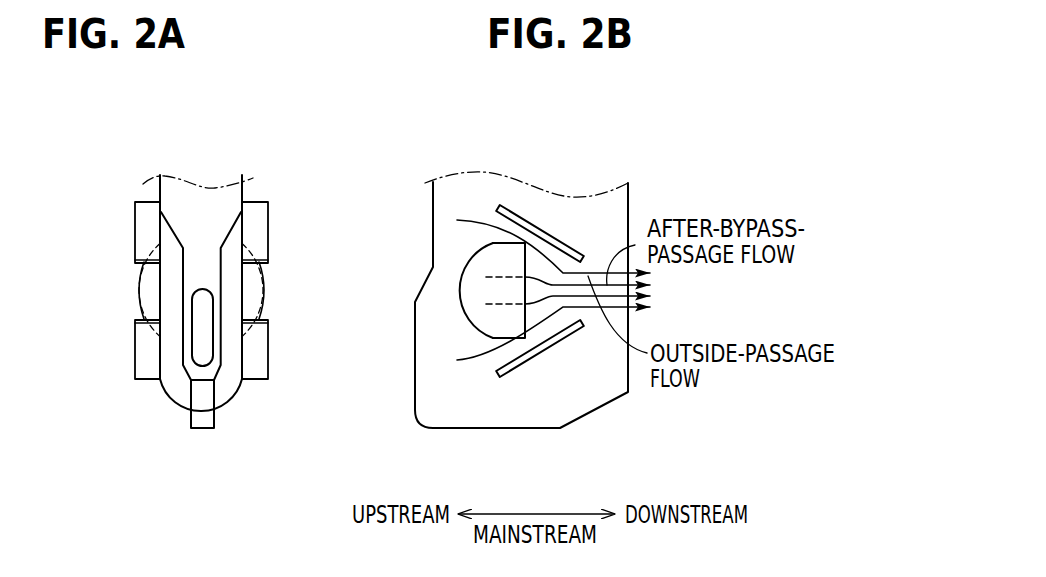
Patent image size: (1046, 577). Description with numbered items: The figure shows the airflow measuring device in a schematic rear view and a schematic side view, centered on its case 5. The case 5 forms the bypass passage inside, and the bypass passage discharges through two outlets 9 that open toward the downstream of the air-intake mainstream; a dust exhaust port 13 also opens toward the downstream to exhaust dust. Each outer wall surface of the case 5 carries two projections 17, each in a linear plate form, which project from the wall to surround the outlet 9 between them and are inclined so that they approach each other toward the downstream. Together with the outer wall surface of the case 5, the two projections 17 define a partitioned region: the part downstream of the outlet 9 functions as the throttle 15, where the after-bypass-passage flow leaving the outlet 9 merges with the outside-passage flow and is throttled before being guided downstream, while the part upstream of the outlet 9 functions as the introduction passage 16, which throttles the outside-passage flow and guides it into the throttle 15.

In FIG. 2A, the case 5 is at (120, 160).
In FIG. 2B, the case 5 is at (630, 147).
In FIG. 2A, the outlet 9 is at (152, 291).
In FIG. 2B, the outlet 9 is at (530, 331).
In FIG. 2A, the dust exhaust port 13 is at (198, 342).
In FIG. 2B, the throttle 15 is at (568, 235).
In FIG. 2B, the introduction passage 16 is at (508, 228).
In FIG. 2A, the projection 17 is at (140, 223).
In FIG. 2B, the projection 17 is at (537, 225).